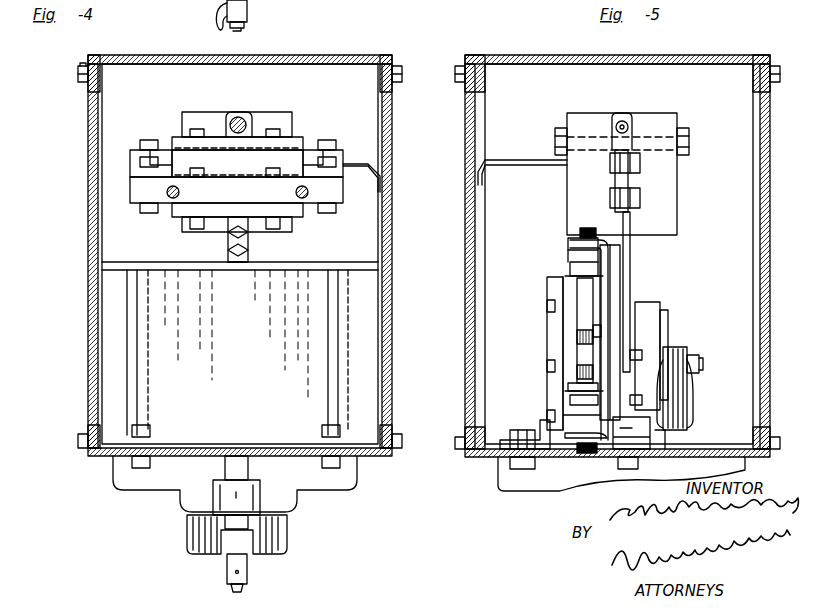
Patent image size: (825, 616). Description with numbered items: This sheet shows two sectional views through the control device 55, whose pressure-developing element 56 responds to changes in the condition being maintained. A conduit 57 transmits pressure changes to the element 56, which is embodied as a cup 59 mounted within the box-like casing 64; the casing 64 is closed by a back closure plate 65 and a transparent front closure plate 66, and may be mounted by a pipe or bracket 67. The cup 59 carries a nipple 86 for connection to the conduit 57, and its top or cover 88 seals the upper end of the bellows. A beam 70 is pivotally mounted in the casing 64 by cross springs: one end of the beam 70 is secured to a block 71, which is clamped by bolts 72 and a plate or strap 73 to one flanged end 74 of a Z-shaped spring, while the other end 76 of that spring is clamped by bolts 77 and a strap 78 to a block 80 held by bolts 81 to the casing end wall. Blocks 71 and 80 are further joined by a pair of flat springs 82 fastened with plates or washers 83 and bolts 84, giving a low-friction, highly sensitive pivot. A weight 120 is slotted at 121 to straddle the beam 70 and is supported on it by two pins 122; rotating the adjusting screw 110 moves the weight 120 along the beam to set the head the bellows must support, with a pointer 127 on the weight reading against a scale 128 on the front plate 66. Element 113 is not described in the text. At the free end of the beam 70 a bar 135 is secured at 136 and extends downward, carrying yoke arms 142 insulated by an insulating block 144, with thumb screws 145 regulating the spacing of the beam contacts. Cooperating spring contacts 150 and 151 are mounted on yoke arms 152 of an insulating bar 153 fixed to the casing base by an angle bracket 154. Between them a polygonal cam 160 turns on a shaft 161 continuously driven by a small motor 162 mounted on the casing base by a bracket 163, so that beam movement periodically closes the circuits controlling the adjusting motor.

In FIG. 4, the device 55 is at (352, 52).
In FIG. 5, the device 55 is at (562, 52).
In FIG. 4, the element 56 is at (115, 362).
In FIG. 4, the conduit 57 is at (232, 26).
In FIG. 4, the cup 59 is at (125, 330).
In FIG. 4, the casing 64 is at (104, 456).
In FIG. 5, the casing 64 is at (718, 58).
In FIG. 4, the back closure plate 65 is at (100, 96).
In FIG. 5, the back closure plate 65 is at (765, 165).
In FIG. 4, the front closure plate 66 is at (380, 340).
In FIG. 5, the front closure plate 66 is at (470, 113).
In FIG. 4, the pipe or bracket 67 is at (280, 530).
In FIG. 5, the beam 70 is at (615, 182).
In FIG. 4, the block 71 is at (168, 152).
In FIG. 4, the bolts 72 is at (197, 128).
In FIG. 4, the plate or strap 73 is at (182, 140).
In FIG. 4, the flanged end 74 is at (292, 146).
In FIG. 4, the other end 76 is at (170, 205).
In FIG. 4, the bolts 77 is at (200, 224).
In FIG. 4, the plate or strap 78 is at (255, 222).
In FIG. 4, the block 80 is at (136, 200).
In FIG. 4, the bolts 81 is at (167, 192).
In FIG. 4, the flat springs 82 is at (334, 182).
In FIG. 4, the plates or washers 83 is at (130, 168).
In FIG. 4, the bolts 84 is at (140, 145).
In FIG. 4, the nipple 86 is at (230, 467).
In FIG. 4, the top or cover 88 is at (118, 263).
In FIG. 4, the adjusting screw 110 is at (238, 118).
In FIG. 4, the pivot pin 113 is at (243, 117).
In FIG. 4, the weight 120 is at (278, 117).
In FIG. 5, the weight 120 is at (668, 122).
In FIG. 5, the slot 121 is at (622, 113).
In FIG. 5, the bolts or pins 122 is at (556, 140).
In FIG. 4, the pointer 127 is at (390, 162).
In FIG. 5, the pointer 127 is at (482, 192).
In FIG. 5, the scale 128 is at (476, 192).
In FIG. 5, the bar 135 is at (632, 252).
In FIG. 5, the bolting 136 is at (640, 198).
In FIG. 5, the yoke arms 142 is at (570, 242).
In FIG. 5, the insulating block 144 is at (640, 303).
In FIG. 5, the thumb screws 145 is at (582, 228).
In FIG. 5, the spring contact 150 is at (570, 278).
In FIG. 5, the spring contact 151 is at (570, 390).
In FIG. 5, the yoke arms 152 is at (568, 263).
In FIG. 5, the block or bar 153 is at (555, 328).
In FIG. 5, the angle bracket 154 is at (506, 470).
In FIG. 5, the polygonal cam 160 is at (582, 312).
In FIG. 5, the shaft 161 is at (594, 338).
In FIG. 5, the motor 162 is at (688, 350).
In FIG. 5, the bracket 163 is at (660, 428).